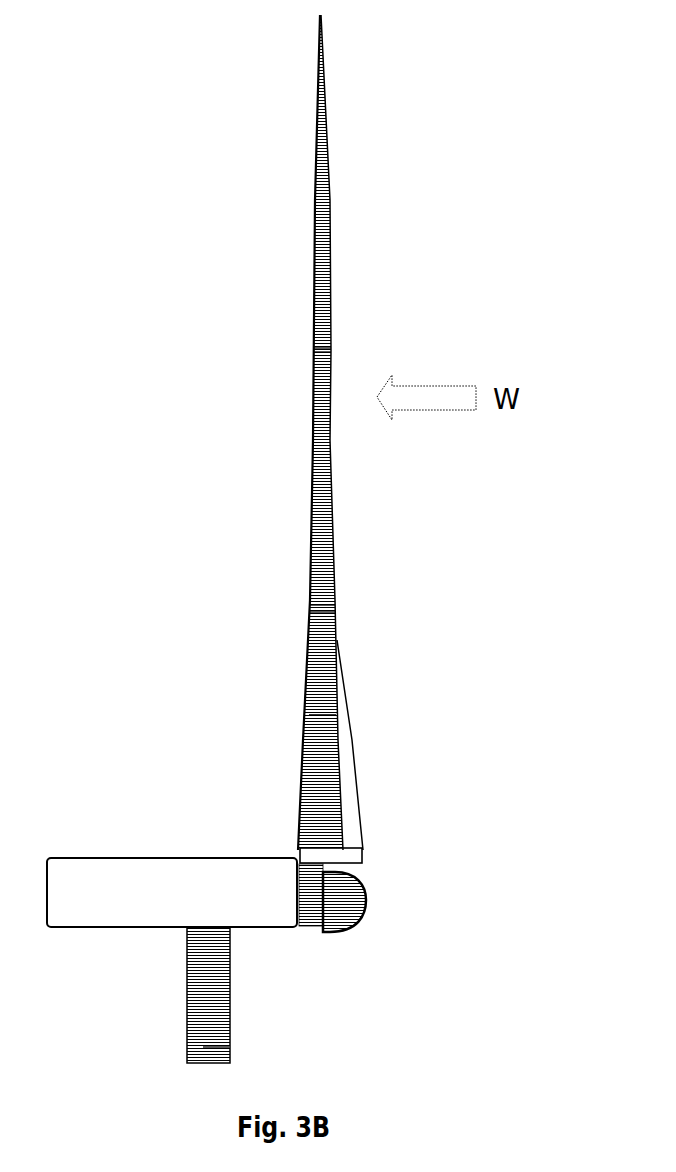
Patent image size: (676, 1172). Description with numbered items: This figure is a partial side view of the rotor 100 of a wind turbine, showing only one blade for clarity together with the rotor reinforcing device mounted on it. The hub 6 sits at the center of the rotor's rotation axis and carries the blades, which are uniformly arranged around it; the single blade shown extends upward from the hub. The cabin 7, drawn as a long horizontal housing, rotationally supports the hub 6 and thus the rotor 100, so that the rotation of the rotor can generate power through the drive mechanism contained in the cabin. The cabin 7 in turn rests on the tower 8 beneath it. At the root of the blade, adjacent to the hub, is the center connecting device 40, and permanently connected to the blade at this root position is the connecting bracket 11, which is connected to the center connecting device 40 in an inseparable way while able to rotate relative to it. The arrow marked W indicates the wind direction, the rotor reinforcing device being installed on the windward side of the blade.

The rotor 100 is at (410, 303).
The connecting bracket 11 is at (367, 859).
The center connecting device 40 is at (393, 911).
The cabin 7 is at (140, 878).
The hub 6 is at (308, 920).
The tower 8 is at (230, 1047).